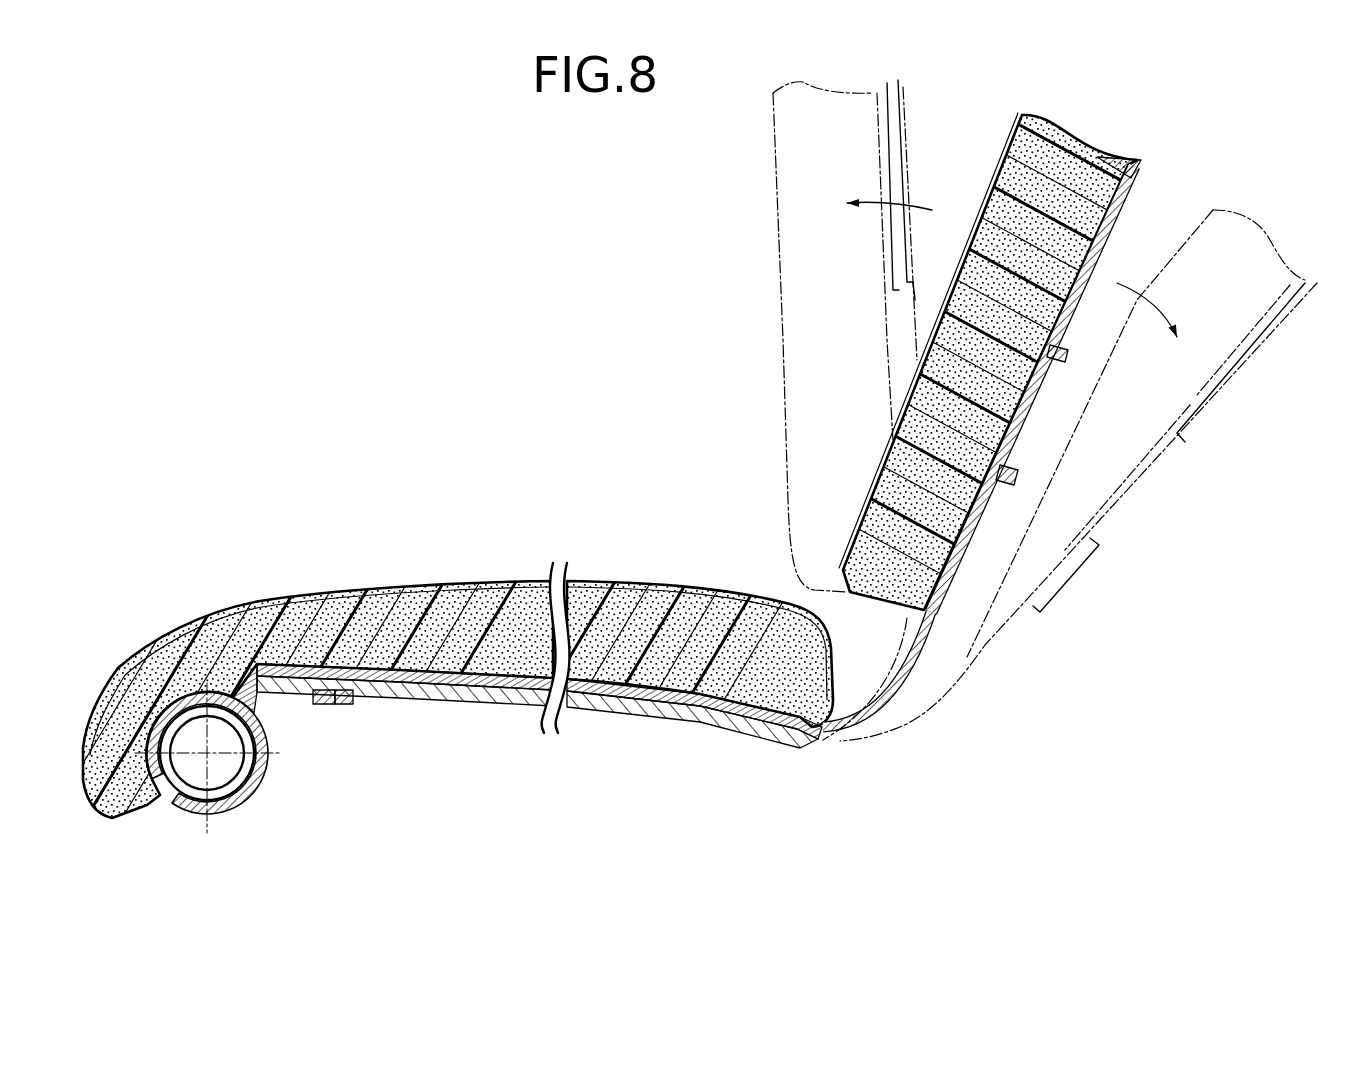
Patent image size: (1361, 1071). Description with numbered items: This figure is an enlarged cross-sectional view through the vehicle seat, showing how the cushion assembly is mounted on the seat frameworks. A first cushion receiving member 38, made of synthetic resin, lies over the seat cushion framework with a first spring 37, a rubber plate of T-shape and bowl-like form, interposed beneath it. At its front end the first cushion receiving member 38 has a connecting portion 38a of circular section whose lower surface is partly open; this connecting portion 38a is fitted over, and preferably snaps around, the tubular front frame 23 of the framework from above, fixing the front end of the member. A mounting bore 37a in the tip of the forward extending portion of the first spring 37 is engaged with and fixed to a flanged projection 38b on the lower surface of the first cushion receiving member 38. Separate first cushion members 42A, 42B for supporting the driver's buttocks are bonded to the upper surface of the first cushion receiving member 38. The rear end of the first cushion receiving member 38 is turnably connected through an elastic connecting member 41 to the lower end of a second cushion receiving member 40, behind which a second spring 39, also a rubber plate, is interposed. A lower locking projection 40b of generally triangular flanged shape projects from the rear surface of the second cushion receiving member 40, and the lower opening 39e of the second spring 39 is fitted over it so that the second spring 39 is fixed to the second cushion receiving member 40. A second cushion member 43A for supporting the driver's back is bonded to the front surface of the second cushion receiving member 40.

The front frame 23 is at (227, 798).
The first spring 37 is at (653, 737).
The mounting bore 37a is at (330, 707).
The first cushion receiving member 38 is at (487, 697).
The connecting portion 38a is at (180, 784).
The flanged projection 38b is at (342, 704).
The second spring 39 is at (1072, 384).
The lower opening 39e is at (1017, 463).
The second cushion receiving member 40 is at (1123, 208).
The lower locking projection 40b is at (1057, 388).
The connecting member 41 is at (913, 672).
The first cushion member 42A is at (407, 592).
The first cushion member 42B is at (681, 604).
The second cushion member 43A is at (988, 198).